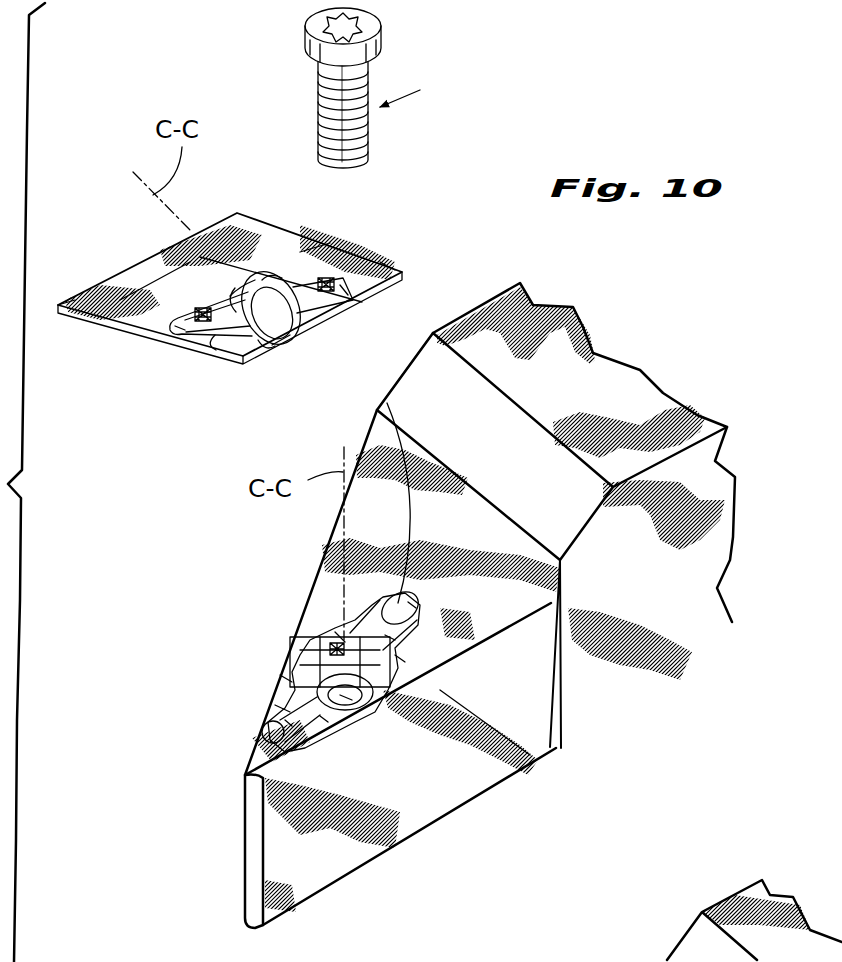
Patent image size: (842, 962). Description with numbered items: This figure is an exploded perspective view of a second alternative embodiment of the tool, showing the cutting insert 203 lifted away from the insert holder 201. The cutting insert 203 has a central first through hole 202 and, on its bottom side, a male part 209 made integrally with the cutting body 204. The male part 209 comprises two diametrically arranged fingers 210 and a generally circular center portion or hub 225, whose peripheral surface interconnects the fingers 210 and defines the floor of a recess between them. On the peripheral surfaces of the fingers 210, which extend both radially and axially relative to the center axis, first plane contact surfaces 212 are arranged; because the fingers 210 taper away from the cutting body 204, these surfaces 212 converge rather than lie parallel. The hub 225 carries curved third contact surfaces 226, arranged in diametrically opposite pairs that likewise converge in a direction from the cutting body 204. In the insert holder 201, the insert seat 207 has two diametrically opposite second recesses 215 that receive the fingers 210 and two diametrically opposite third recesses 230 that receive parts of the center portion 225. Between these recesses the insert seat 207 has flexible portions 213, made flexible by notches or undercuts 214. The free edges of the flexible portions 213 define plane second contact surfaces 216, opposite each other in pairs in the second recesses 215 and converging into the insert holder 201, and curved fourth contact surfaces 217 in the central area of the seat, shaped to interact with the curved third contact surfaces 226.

The insert holder 201 is at (483, 802).
The central first through hole 202 is at (268, 303).
The cutting insert 203 is at (133, 253).
The cutting body 204 is at (278, 228).
The insert seat 207 is at (405, 682).
The male part 209 is at (268, 357).
The fingers 210 is at (340, 297).
The first plane contact surfaces 212 is at (355, 232).
The flexible portions 213 is at (280, 708).
The notches or undercuts 214 is at (390, 637).
The second recesses 215 is at (378, 411).
The second contact surfaces 216 is at (413, 605).
The fourth contact surfaces 217 is at (337, 637).
The center portion or hub 225 is at (273, 293).
The third contact surfaces 226 is at (247, 293).
The third recesses 230 is at (303, 663).